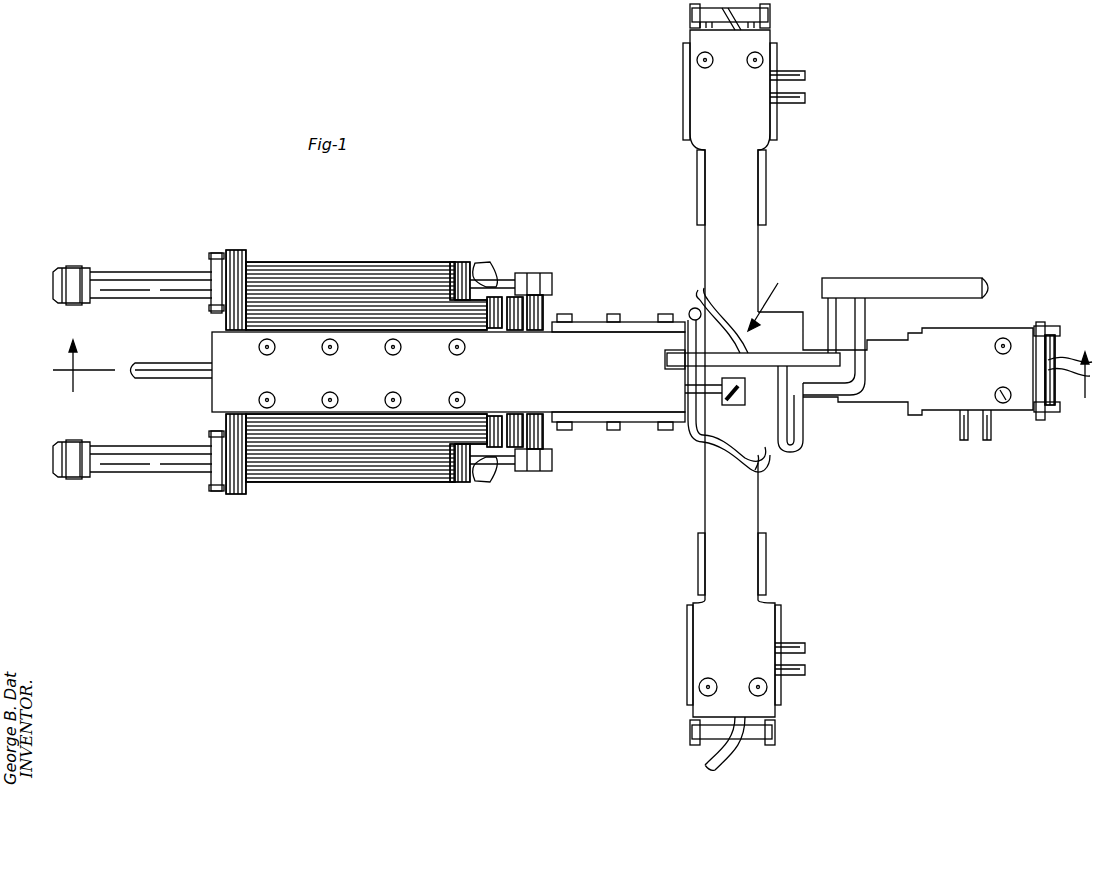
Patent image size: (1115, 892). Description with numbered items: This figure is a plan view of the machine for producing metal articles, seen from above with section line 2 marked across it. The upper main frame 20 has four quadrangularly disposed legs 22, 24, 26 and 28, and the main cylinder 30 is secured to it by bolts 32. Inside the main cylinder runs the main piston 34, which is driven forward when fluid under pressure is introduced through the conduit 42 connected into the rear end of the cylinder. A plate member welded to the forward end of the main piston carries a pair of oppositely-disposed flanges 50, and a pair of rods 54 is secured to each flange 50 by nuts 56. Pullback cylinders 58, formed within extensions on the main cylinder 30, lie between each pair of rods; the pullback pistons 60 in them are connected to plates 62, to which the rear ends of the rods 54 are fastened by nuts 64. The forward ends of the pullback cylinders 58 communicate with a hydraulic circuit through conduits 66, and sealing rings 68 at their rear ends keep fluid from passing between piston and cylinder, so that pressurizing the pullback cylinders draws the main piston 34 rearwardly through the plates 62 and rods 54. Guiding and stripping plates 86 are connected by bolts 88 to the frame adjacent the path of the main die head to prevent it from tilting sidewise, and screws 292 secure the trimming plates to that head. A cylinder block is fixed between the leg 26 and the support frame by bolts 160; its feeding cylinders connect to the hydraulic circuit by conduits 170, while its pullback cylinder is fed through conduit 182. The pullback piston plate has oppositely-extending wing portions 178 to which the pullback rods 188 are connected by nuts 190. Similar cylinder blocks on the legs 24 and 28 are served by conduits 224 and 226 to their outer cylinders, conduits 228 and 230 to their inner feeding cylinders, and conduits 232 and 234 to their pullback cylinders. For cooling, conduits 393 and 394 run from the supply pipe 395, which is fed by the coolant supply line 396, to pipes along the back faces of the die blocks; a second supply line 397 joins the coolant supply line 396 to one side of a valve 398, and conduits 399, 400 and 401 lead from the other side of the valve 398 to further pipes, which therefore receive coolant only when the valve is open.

The section line 2- 2 is at (571, 369).
The upper main frame 20 is at (772, 300).
The leg 22 is at (580, 440).
The leg 24 is at (752, 506).
The leg 26 is at (880, 402).
The leg 28 is at (752, 192).
The main cylinder 30 is at (470, 420).
The bolts 32 is at (270, 355).
The main piston 34 is at (498, 336).
The conduit 42 is at (148, 378).
The flanges 50 is at (534, 312).
The rods 54 is at (318, 280).
The nuts 56 is at (518, 272).
The pullback cylinders 58 is at (420, 268).
The pullback pistons 60 is at (148, 272).
The plates 62 is at (74, 268).
The nuts 64 is at (72, 306).
The conduits 66 is at (492, 262).
The sealing rings 68 is at (216, 254).
The guiding and stripping plates 86 is at (620, 322).
The bolts 88 is at (565, 315).
The bolts 160 is at (1000, 388).
The conduits 170 is at (950, 452).
The wing portions 178 is at (1036, 350).
The conduit 182 is at (988, 440).
The pullback rods 188 is at (1022, 440).
The nuts 190 is at (1052, 328).
The conduits 224 is at (705, 770).
The conduits 226 is at (728, 30).
The conduit 228 is at (805, 645).
The conduit 230 is at (805, 100).
The conduit 232 is at (790, 680).
The conduit 234 is at (805, 78).
The screws 292 is at (698, 298).
The conduit 393 is at (785, 455).
The conduit 394 is at (692, 442).
The supply pipe 395 is at (760, 353).
The coolant supply line 396 is at (832, 280).
The second supply line 397 is at (866, 365).
The valve 398 is at (738, 404).
The conduit 399 is at (688, 343).
The conduit 400 is at (758, 468).
The conduit 401 is at (702, 444).